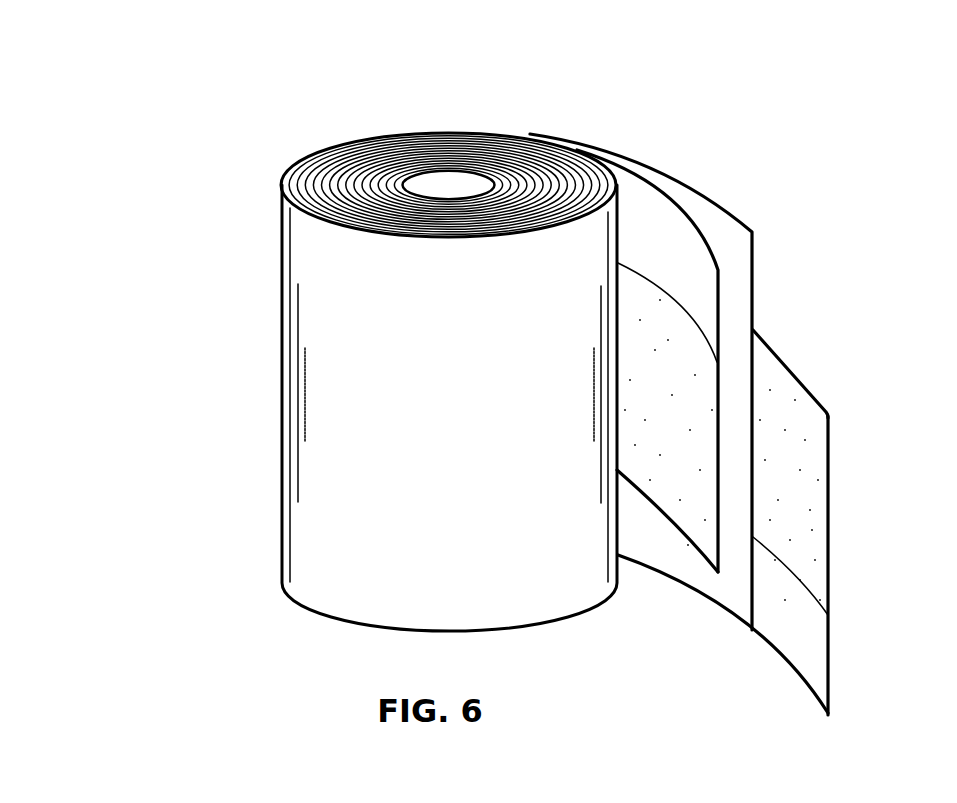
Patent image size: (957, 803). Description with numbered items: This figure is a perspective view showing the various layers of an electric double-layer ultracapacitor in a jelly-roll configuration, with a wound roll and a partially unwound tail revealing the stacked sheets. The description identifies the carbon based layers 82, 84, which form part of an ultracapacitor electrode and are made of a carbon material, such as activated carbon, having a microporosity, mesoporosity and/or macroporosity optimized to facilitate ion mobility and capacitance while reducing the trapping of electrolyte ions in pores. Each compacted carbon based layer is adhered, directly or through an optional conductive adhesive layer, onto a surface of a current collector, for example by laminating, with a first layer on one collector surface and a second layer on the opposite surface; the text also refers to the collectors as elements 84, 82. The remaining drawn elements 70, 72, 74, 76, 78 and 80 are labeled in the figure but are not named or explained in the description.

The roll assembly 70 is at (469, 376).
The sheet material / tail 72 is at (652, 344).
The roll core / wound roll 74 is at (666, 486).
The outer layer 76 is at (707, 424).
The fold edge 78 is at (813, 386).
The adhesive region 80 is at (820, 500).
The carbon based layer 82 is at (818, 666).
The carbon based layer 84 is at (683, 214).